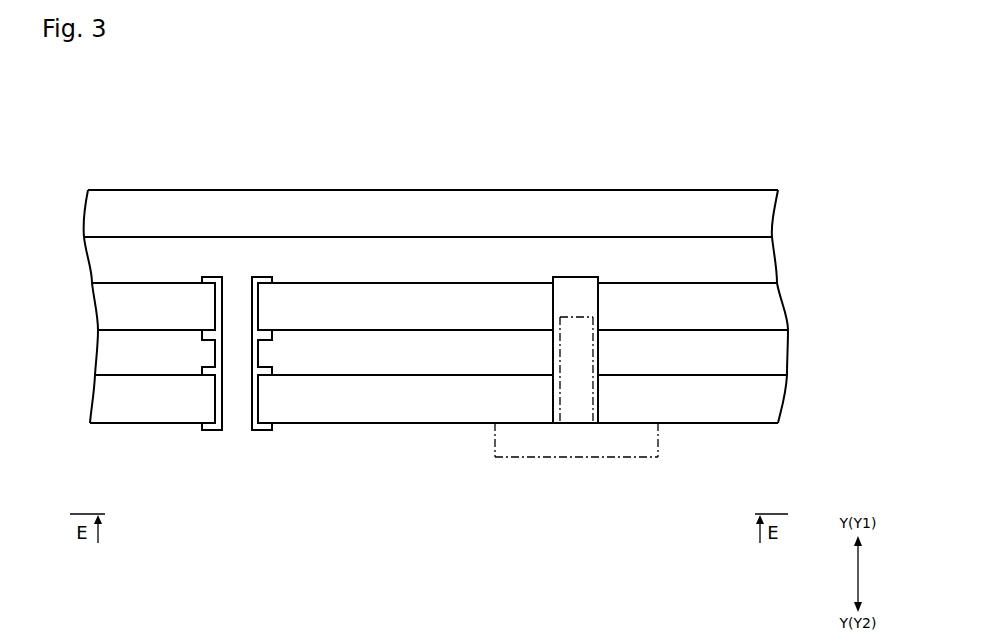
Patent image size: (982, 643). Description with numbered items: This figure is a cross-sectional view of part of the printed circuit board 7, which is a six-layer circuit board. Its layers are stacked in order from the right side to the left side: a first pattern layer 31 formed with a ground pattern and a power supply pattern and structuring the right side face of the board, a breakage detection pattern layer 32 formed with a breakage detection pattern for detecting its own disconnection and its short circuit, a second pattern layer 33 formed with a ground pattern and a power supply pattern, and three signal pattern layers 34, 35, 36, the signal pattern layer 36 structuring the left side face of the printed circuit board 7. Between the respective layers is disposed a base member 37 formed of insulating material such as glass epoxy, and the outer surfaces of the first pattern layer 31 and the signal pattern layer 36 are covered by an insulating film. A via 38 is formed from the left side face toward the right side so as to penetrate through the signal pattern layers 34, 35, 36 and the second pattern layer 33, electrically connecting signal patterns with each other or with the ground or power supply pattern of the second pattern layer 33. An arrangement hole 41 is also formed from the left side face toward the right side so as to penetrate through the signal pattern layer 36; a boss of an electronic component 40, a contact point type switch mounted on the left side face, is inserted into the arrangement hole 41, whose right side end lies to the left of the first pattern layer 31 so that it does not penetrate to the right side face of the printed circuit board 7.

The printed circuit board 7 is at (751, 119).
The first pattern layer 31 is at (318, 190).
The breakage detection pattern layer 32 is at (375, 237).
The second pattern layer 33 is at (440, 283).
The signal pattern layer 34 is at (448, 330).
The signal pattern layer 35 is at (382, 375).
The signal pattern layer 36 is at (326, 423).
The base member 37 is at (712, 227).
The via 38 is at (250, 403).
The electronic component 40 is at (572, 457).
The arrangement hole 41 is at (555, 302).